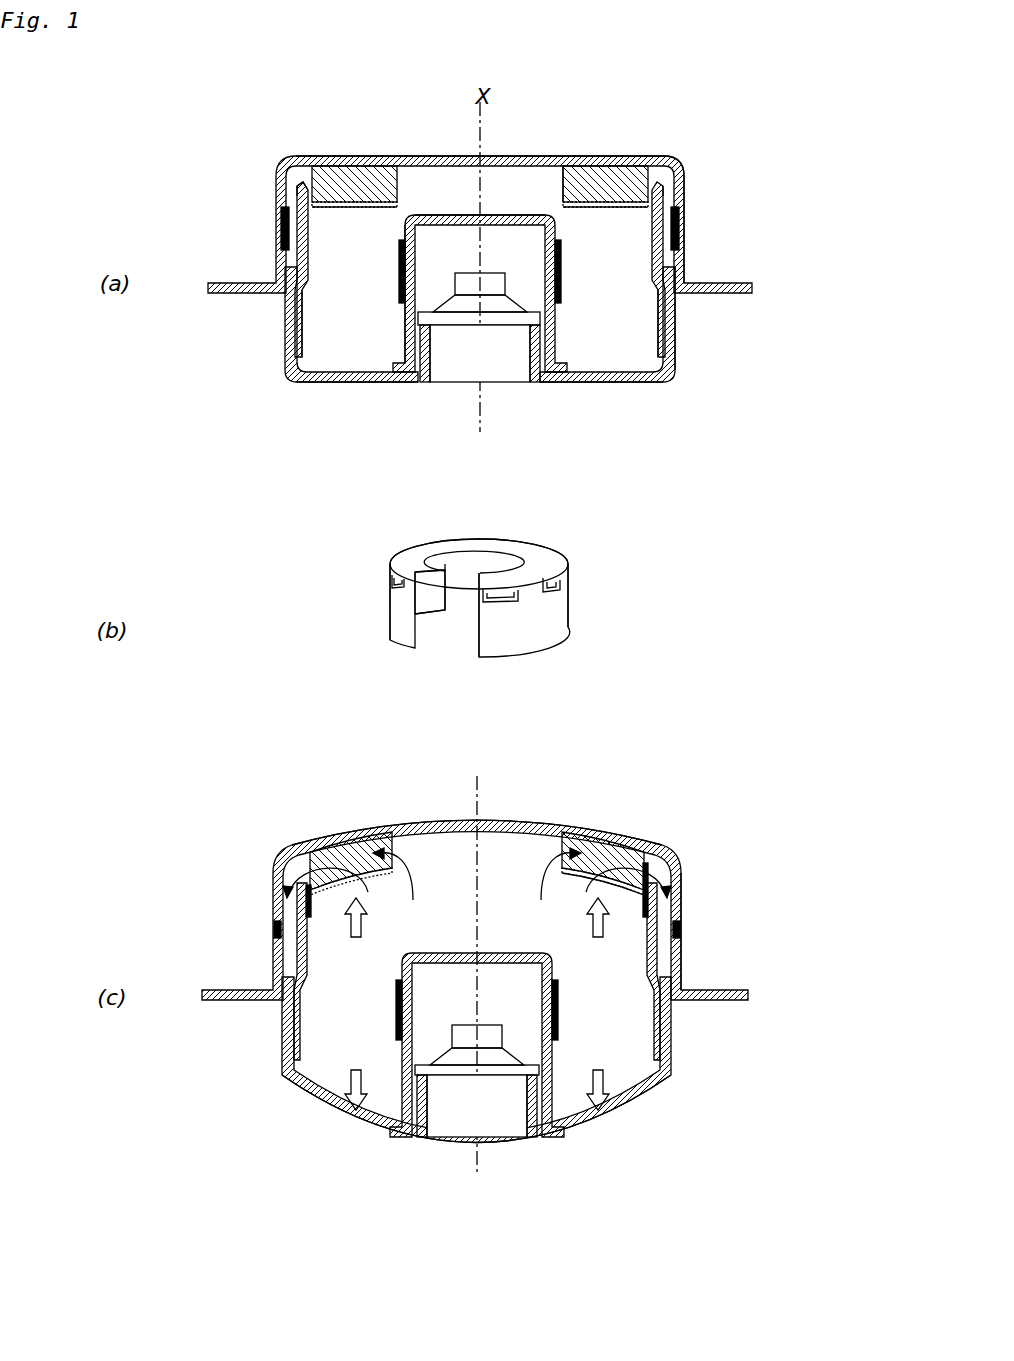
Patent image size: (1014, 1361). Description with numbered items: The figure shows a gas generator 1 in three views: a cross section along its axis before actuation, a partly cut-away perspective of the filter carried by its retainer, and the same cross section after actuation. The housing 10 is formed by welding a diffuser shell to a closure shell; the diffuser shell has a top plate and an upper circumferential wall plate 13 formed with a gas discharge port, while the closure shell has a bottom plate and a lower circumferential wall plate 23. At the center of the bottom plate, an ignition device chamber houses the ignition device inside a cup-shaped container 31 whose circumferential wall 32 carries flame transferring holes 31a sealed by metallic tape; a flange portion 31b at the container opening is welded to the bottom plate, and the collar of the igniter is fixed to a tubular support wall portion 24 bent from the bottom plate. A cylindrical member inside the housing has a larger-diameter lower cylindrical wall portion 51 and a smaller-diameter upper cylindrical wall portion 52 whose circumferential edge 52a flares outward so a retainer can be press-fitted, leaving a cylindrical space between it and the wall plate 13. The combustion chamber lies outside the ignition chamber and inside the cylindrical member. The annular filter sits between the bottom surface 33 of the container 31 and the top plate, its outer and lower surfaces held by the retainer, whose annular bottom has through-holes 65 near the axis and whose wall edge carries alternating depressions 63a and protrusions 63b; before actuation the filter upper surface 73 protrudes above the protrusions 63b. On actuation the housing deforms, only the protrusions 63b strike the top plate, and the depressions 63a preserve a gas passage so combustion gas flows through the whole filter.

The device 1 is at (587, 138).
The housing 10 is at (796, 262).
The upper circumferential wall plate 13 is at (686, 195).
The lower circumferential wall plate 23 is at (680, 346).
The tubular support wall portion 24 is at (418, 384).
The cup-shaped container 31 is at (502, 214).
The flame transferring holes 31a is at (401, 300).
The flange portion 31b is at (553, 373).
The circumferential wall 32 is at (408, 332).
The bottom surface 33 is at (441, 215).
The lower cylindrical wall portion 51 is at (659, 325).
The upper cylindrical wall portion 52 is at (655, 253).
The circumferential edge 52a is at (301, 172).
The depressions 63a is at (563, 595).
The protrusions 63b is at (541, 600).
The through-holes 65 is at (368, 207).
The upper surface 73 is at (534, 555).